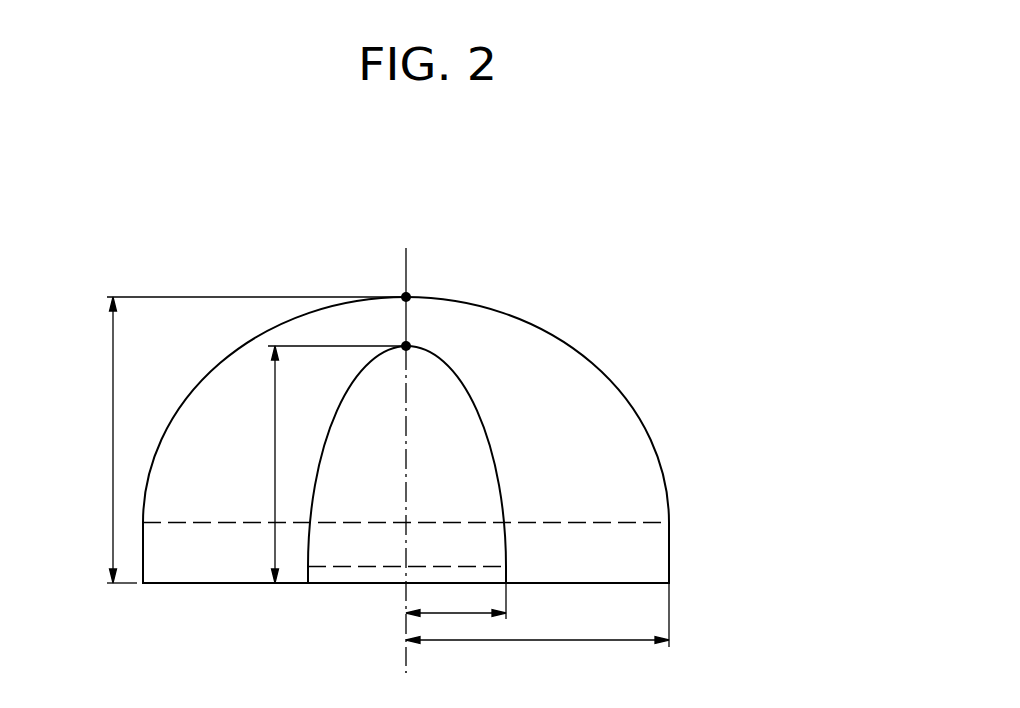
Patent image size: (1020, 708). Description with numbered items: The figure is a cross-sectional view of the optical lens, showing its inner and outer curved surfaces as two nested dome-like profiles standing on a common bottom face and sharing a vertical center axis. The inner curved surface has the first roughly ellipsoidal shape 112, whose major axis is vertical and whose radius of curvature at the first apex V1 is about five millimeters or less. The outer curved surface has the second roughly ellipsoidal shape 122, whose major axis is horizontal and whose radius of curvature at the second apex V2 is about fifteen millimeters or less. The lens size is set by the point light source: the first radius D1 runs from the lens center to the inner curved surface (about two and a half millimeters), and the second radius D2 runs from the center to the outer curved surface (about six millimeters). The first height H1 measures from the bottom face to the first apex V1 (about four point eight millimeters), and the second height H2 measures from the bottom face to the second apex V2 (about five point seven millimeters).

The second roughly ellipsoidal shape 122 is at (548, 330).
The first roughly ellipsoidal shape 112 is at (490, 442).
The first apex V1 is at (406, 346).
The second apex V2 is at (406, 297).
The first height H1 is at (326, 464).
The second height H2 is at (244, 440).
The first radius D1 is at (456, 601).
The second radius D2 is at (537, 615).